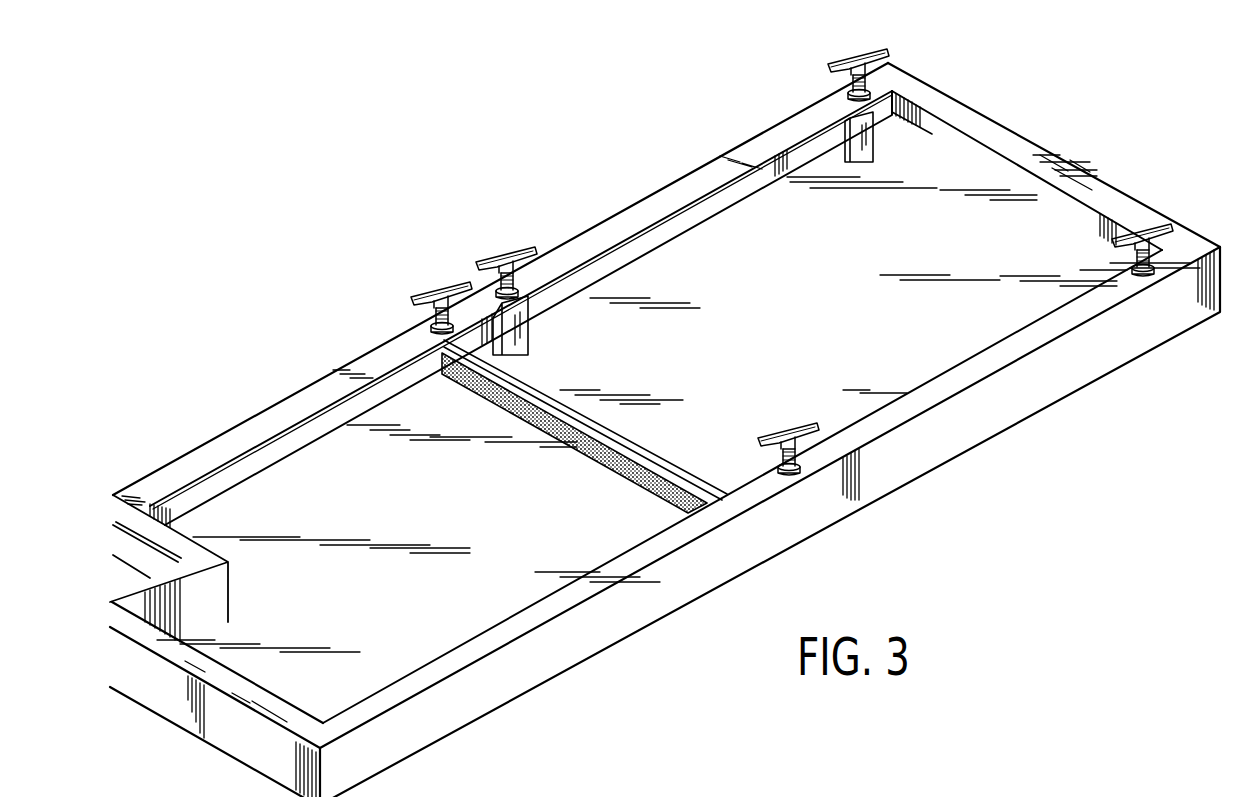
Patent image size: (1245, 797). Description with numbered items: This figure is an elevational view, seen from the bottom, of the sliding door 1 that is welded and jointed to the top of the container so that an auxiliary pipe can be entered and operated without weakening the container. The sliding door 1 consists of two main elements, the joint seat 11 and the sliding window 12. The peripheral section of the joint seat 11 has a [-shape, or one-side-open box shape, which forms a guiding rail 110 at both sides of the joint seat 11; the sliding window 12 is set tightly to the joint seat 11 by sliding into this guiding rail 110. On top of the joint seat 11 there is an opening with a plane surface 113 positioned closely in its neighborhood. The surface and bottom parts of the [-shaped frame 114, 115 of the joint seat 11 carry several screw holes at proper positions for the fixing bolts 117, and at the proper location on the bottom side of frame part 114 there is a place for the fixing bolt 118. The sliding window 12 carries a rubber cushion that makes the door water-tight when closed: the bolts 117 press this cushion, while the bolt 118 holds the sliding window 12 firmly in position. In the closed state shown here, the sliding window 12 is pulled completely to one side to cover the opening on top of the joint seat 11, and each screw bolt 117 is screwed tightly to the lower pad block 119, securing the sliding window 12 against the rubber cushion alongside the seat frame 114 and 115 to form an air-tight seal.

The sliding door 1 is at (637, 199).
The joint seat 11 is at (226, 442).
The sliding window 12 is at (712, 257).
The guiding rail 110 is at (307, 435).
The plane surface 113 is at (540, 577).
The [ shape frame (surface part) 114 is at (792, 120).
The [ shape frame (bottom part) 115 is at (983, 363).
The bolt 117 is at (890, 53).
The bolt 118 is at (445, 288).
The lower pad block 119 is at (878, 148).